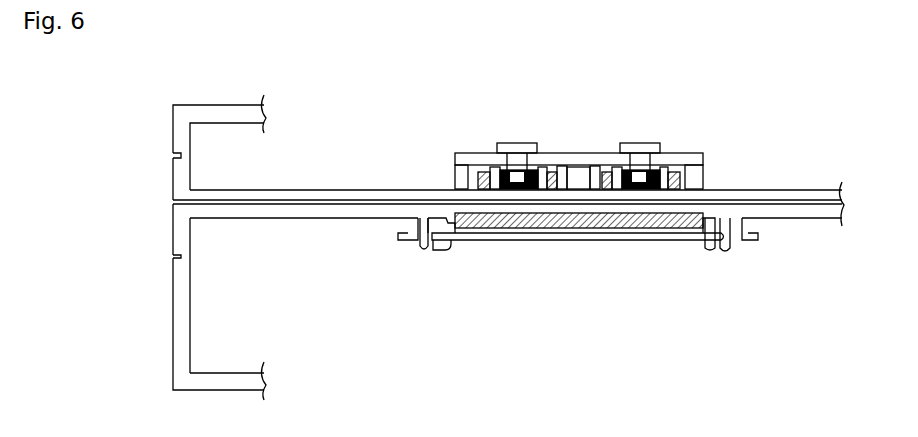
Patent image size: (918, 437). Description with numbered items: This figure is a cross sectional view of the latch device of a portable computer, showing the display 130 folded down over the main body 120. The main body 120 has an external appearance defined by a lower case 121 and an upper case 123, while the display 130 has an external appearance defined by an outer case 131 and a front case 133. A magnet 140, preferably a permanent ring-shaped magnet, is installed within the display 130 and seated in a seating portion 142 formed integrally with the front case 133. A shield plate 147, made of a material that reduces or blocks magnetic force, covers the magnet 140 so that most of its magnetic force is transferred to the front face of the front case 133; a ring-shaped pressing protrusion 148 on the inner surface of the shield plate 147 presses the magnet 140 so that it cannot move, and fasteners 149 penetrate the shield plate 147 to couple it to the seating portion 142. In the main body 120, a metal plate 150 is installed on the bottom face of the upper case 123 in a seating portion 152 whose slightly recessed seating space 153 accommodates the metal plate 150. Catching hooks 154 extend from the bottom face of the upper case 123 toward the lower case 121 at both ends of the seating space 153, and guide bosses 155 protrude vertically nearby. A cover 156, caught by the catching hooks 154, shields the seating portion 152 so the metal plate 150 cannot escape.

The main body 120 is at (85, 230).
The lower case 121 is at (183, 296).
The upper case 123 is at (182, 233).
The display 130 is at (85, 120).
The outer case 131 is at (181, 123).
The front case 133 is at (182, 190).
The magnet 140 is at (681, 183).
The seating portion 142 is at (486, 212).
The shield plate 147 is at (678, 152).
The pressing protrusion 148 is at (493, 229).
The fastener 149 is at (518, 143).
The metal plate 150 is at (627, 235).
The seating portion 152 is at (715, 248).
The seating space 153 is at (677, 235).
The catching hook 154 is at (442, 250).
The guide boss 155 is at (425, 250).
The cover 156 is at (567, 238).